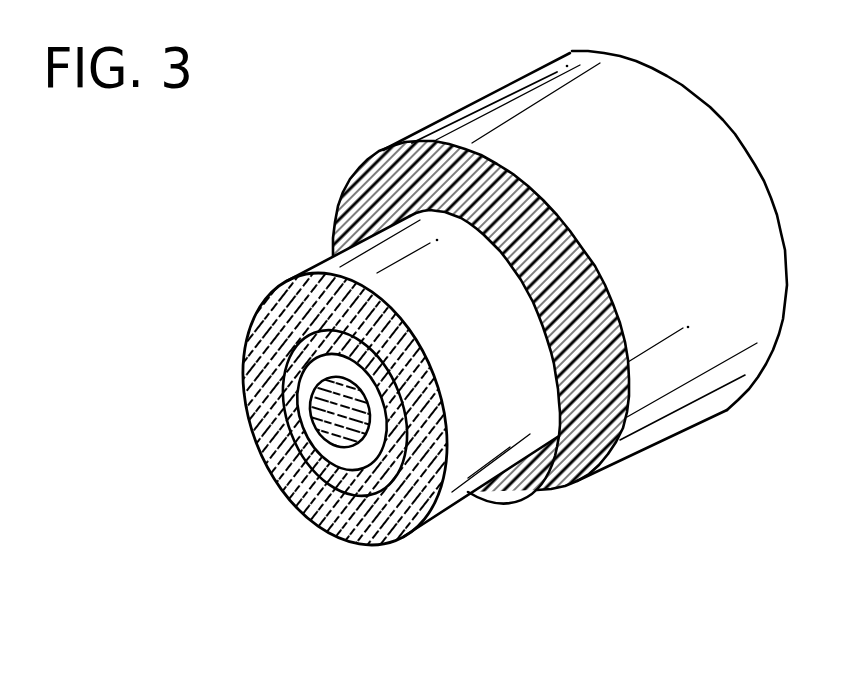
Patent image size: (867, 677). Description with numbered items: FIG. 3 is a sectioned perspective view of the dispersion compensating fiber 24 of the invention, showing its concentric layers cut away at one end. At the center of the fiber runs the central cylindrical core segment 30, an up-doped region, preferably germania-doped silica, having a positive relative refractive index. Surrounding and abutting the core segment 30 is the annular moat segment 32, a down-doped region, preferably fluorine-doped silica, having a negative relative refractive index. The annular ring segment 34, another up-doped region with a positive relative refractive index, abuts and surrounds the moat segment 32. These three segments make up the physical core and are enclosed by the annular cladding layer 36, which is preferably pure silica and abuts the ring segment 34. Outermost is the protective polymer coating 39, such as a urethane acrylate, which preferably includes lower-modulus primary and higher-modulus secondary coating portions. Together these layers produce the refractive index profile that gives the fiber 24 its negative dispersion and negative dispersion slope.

The dispersion compensating fiber 24 is at (692, 350).
The protective polymer coating 39 is at (345, 216).
The annular cladding layer 36 is at (308, 481).
The annular ring segment 34 is at (368, 478).
The annular moat segment 32 is at (363, 452).
The central cylindrical core segment 30 is at (338, 416).